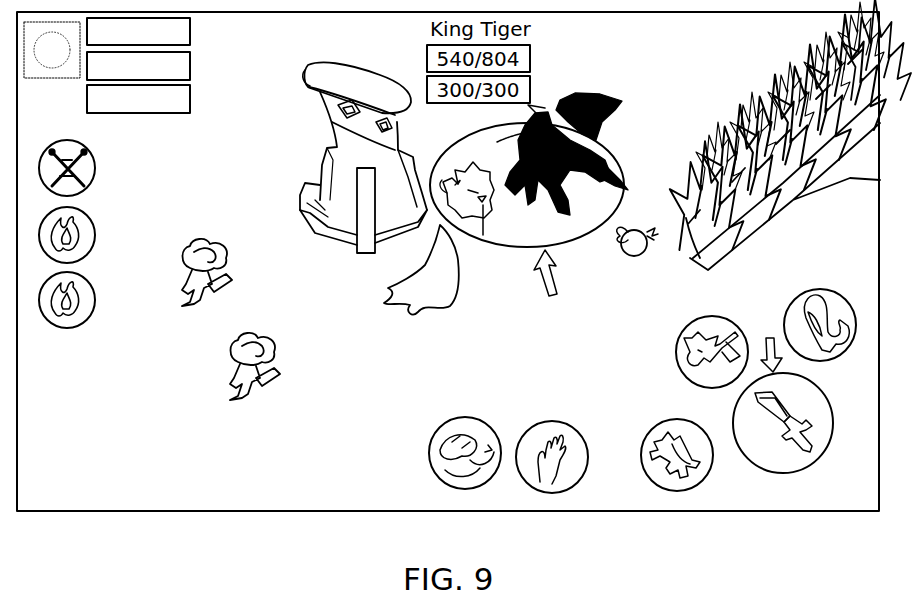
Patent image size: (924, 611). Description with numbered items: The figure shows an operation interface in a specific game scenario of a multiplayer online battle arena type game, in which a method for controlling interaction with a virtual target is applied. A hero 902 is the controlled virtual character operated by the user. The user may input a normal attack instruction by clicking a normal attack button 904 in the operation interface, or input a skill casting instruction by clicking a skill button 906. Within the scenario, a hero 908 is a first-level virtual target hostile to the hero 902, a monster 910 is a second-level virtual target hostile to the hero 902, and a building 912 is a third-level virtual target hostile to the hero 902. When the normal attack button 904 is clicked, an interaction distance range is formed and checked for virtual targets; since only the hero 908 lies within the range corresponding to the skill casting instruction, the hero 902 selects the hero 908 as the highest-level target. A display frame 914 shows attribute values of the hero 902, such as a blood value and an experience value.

The hero 902 is at (610, 115).
The normal attack button 904 is at (817, 437).
The skill button 906 is at (475, 430).
The hero 908 is at (483, 215).
The monster 910 is at (283, 372).
The building 912 is at (305, 85).
The display frame 914 is at (190, 66).